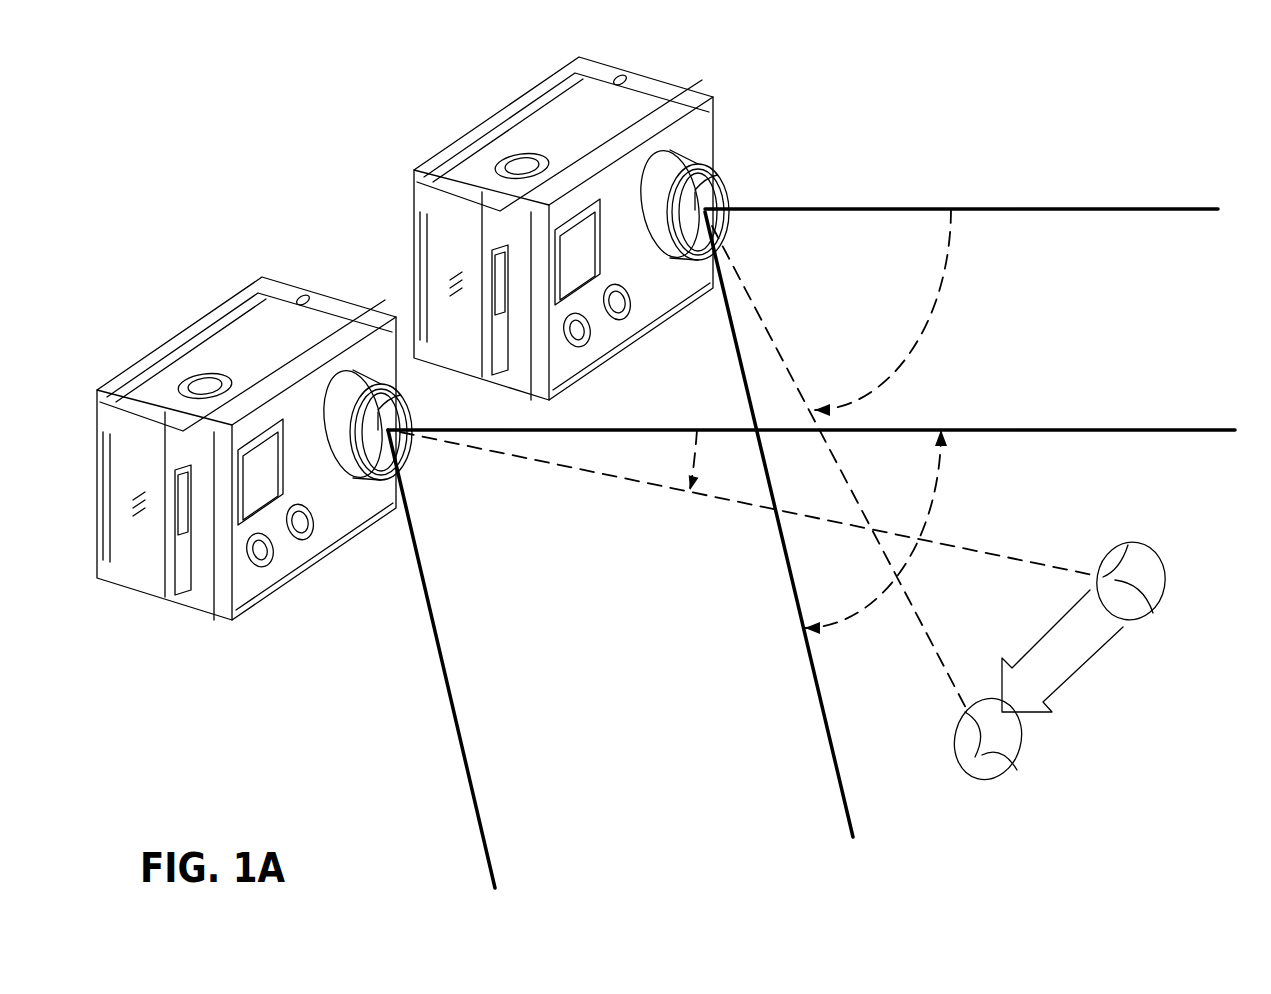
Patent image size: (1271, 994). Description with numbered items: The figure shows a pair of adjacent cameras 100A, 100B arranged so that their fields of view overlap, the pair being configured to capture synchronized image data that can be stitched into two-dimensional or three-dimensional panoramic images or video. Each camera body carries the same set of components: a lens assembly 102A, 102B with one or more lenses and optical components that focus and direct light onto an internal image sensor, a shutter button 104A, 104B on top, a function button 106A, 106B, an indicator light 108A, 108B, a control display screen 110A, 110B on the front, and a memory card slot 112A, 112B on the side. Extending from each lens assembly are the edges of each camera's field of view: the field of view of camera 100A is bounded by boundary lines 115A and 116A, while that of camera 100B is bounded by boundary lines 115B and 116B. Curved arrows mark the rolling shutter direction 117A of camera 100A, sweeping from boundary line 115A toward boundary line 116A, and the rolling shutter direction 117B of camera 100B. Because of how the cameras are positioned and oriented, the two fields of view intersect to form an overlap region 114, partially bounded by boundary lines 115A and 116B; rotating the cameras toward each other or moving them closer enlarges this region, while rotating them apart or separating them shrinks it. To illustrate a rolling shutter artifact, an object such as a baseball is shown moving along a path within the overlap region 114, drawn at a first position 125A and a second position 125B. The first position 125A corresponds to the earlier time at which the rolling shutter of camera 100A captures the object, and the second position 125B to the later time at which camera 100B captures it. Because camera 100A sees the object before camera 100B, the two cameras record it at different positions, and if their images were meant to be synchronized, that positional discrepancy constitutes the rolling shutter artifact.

The camera 100A is at (340, 315).
The camera 100B is at (665, 94).
The lens assembly 102A is at (407, 398).
The lens assembly 102B is at (728, 183).
The shutter button 104A is at (205, 383).
The shutter button 104B is at (522, 162).
The function button 106A is at (255, 562).
The function button 106B is at (573, 338).
The indicator light 108A is at (295, 525).
The indicator light 108B is at (613, 305).
The control display screen 110A is at (245, 487).
The control display screen 110B is at (563, 263).
The memory card slot 112A is at (187, 578).
The memory card slot 112B is at (503, 357).
The overlap region 114 is at (896, 532).
The FOV boundary line 115A is at (1112, 429).
The FOV boundary line 115B is at (1112, 209).
The FOV boundary line 116A is at (477, 810).
The FOV boundary line 116B is at (832, 757).
The rolling shutter direction 117A is at (697, 430).
The rolling shutter direction 117B is at (951, 243).
The first position 125A is at (1155, 618).
The second position 125B is at (962, 757).